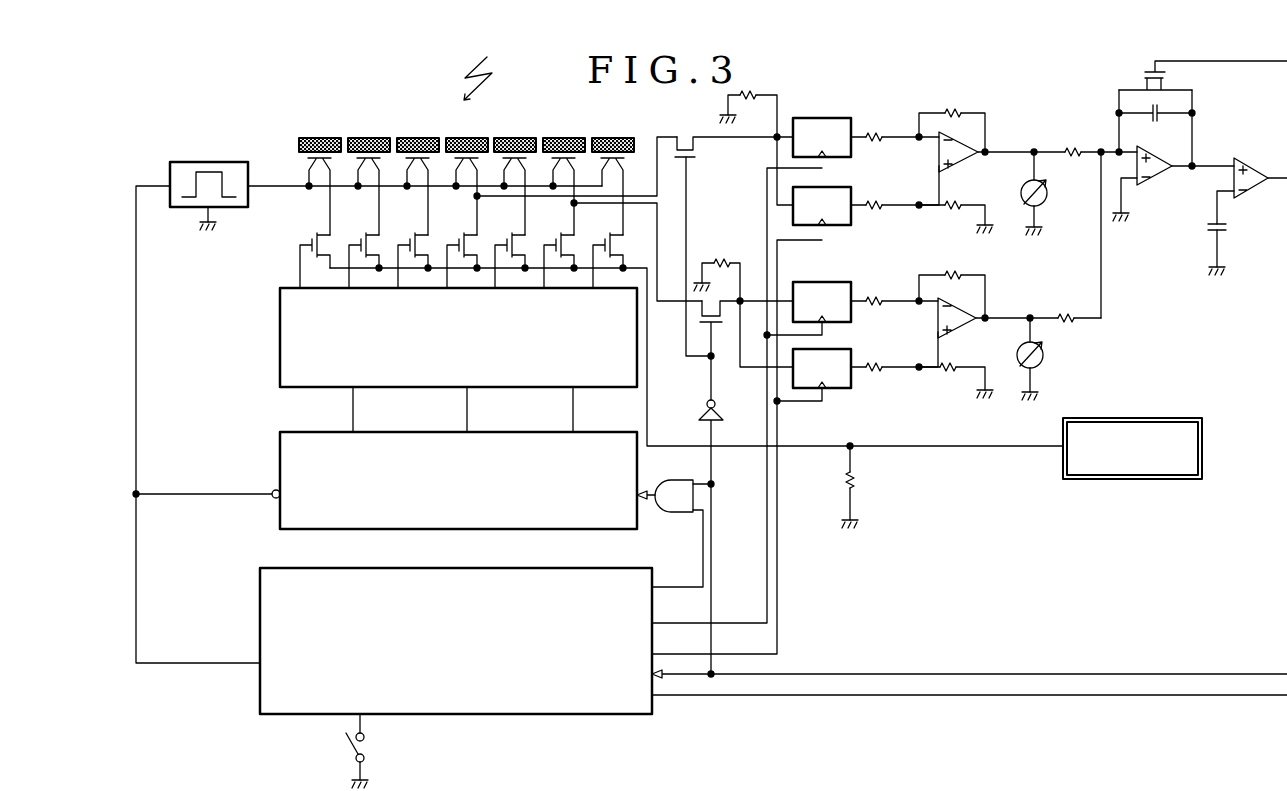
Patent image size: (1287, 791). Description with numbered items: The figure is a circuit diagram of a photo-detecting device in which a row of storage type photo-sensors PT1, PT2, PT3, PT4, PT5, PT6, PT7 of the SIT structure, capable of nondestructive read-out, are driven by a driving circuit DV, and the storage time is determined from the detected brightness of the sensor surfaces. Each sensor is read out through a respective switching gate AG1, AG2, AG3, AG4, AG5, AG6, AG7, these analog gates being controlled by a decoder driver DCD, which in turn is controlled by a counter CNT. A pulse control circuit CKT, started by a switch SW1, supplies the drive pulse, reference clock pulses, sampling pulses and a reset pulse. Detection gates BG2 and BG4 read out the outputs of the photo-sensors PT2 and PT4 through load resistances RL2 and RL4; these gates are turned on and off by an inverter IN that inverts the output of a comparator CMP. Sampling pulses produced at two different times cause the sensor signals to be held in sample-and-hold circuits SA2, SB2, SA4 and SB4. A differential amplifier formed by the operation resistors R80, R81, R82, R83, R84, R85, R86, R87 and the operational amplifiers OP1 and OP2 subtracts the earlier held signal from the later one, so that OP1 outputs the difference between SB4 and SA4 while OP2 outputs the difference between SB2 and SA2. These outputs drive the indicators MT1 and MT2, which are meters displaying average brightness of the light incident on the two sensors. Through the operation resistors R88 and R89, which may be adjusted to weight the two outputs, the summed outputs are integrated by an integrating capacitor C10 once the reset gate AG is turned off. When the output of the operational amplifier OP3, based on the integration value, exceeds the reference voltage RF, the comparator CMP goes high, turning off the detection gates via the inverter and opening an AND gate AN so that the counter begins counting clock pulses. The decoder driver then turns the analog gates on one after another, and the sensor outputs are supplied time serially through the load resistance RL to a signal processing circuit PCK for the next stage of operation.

The driving circuit DV is at (216, 160).
The photo-sensor PT1 is at (590, 137).
The photo-sensor PT2 is at (541, 137).
The photo-sensor PT3 is at (492, 137).
The photo-sensor PT4 is at (444, 137).
The photo-sensor PT5 is at (395, 137).
The photo-sensor PT6 is at (346, 137).
The photo-sensor PT7 is at (297, 137).
The switching gate AG1 is at (604, 242).
The switching gate AG2 is at (554, 240).
The switching gate AG3 is at (505, 240).
The switching gate AG4 is at (457, 240).
The switching gate AG5 is at (408, 240).
The switching gate AG6 is at (359, 240).
The switching gate AG7 is at (310, 240).
The decoder driver DCD is at (458, 337).
The counter CNT is at (458, 480).
The pulse control circuit CKT is at (456, 641).
The AND gate AN is at (674, 496).
The inverter IN is at (718, 414).
The switch SW1 is at (346, 745).
The gate BG4 is at (702, 158).
The gate BG2 is at (702, 334).
The load resistance RL4 is at (759, 93).
The load resistance RL2 is at (732, 263).
The load resistance RL is at (854, 484).
The sample-and-hold circuit SA4 is at (822, 137).
The sample-and-hold circuit SB4 is at (822, 206).
The sample-and-hold circuit SA2 is at (822, 302).
The sample-and-hold circuit SB2 is at (822, 368).
The operation resistor R80 is at (874, 132).
The operation resistor R81 is at (876, 201).
The operation resistor R82 is at (955, 108).
The operation resistor R83 is at (955, 200).
The operation resistor R84 is at (876, 296).
The operation resistor R85 is at (878, 372).
The operation resistor R86 is at (952, 270).
The operation resistor R87 is at (954, 376).
The operation resistor R88 is at (1073, 145).
The operation resistor R89 is at (1065, 312).
The operational amplifier OP1 is at (960, 140).
The operational amplifier OP2 is at (964, 308).
The operational amplifier OP3 is at (1160, 190).
The comparator CMP is at (1252, 162).
The indicator MT1 is at (1046, 196).
The indicator MT2 is at (1042, 358).
The reset gate AG is at (1148, 70).
The integrating capacitor C10 is at (1150, 120).
The reference voltage RF is at (1224, 234).
The signal processing circuit PCK is at (1132, 448).